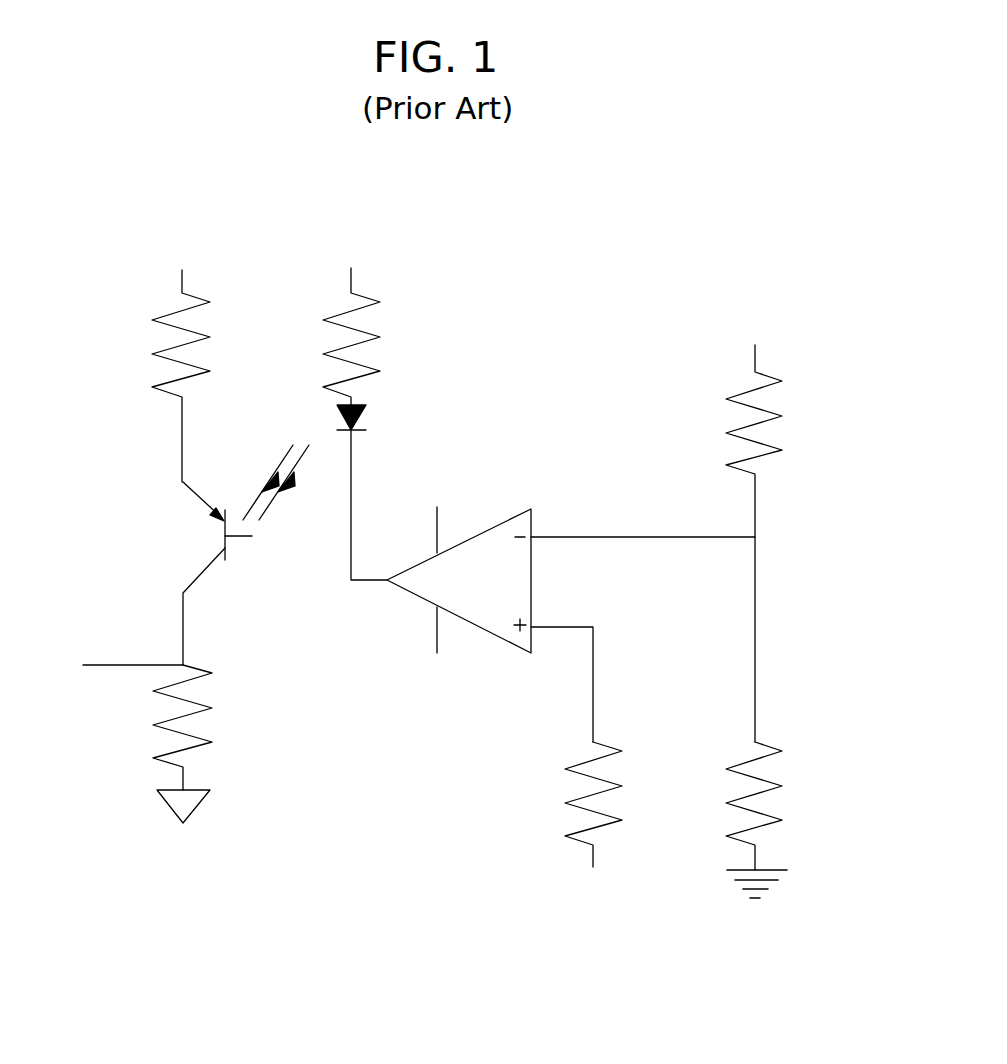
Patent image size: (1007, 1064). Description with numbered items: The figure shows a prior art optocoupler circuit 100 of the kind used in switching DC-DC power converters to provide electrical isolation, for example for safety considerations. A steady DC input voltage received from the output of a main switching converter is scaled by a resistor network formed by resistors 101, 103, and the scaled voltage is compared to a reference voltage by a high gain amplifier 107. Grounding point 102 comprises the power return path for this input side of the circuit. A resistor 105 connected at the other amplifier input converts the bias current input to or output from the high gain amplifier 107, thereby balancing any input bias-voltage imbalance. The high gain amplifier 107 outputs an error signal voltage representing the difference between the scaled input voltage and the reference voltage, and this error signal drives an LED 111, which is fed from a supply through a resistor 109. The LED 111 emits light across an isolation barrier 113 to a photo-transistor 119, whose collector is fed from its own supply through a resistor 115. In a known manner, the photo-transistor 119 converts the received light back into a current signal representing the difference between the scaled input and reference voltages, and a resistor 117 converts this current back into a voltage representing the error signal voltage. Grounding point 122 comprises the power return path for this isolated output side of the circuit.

The optocoupler circuit 100 is at (757, 239).
The resistor 101 is at (780, 417).
The grounding point 102 is at (778, 880).
The resistor 103 is at (766, 813).
The resistor 105 is at (565, 803).
The high gain amplifier 107 is at (510, 517).
The LED bias resistor 109 is at (379, 338).
The LED 111 is at (366, 427).
The isolation barrier 113 is at (278, 367).
The collector resistor 115 is at (150, 357).
The resistor 117 is at (158, 731).
The photo-transistor 119 is at (222, 535).
The grounding point 122 is at (192, 817).